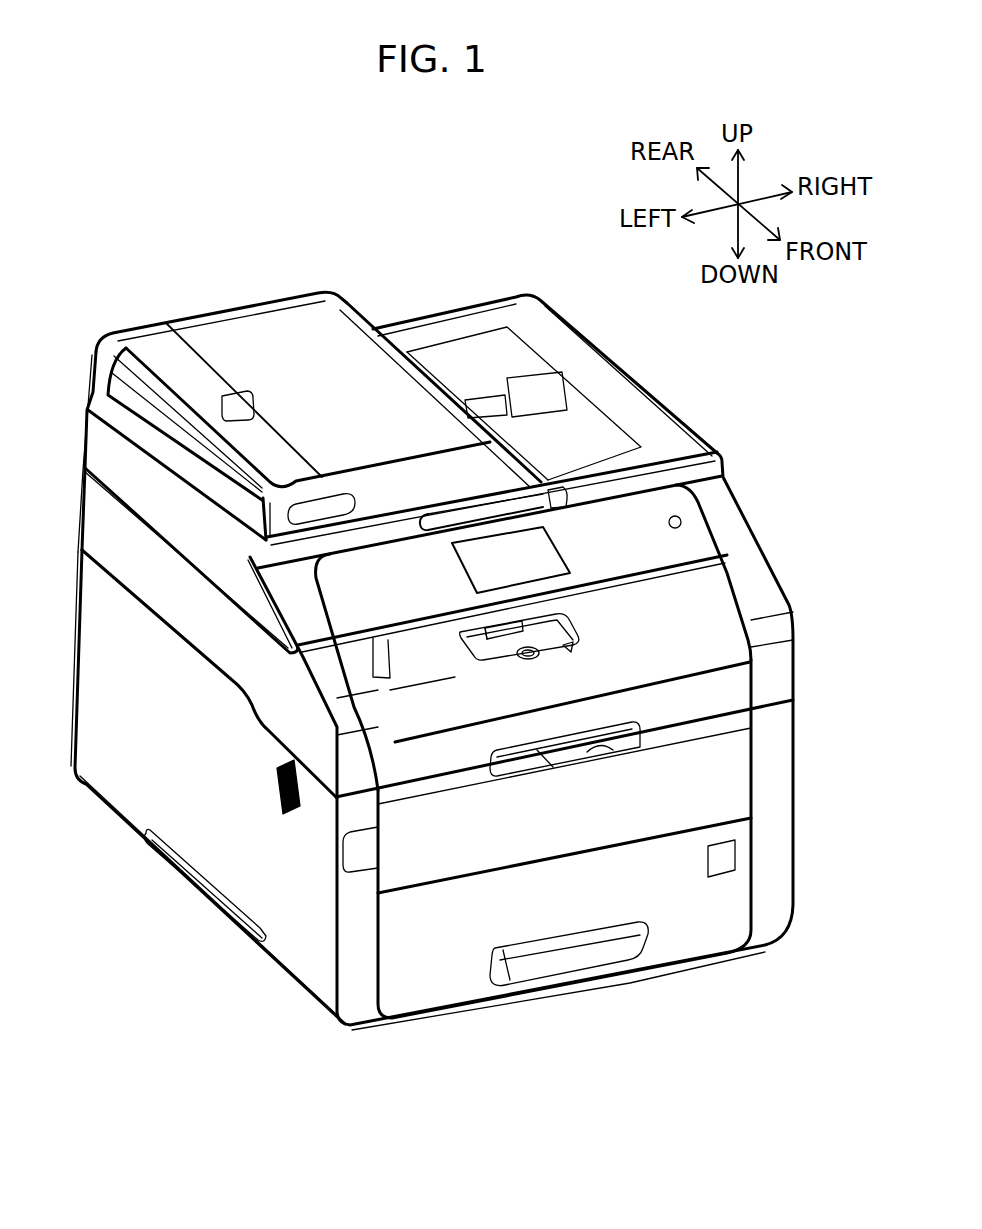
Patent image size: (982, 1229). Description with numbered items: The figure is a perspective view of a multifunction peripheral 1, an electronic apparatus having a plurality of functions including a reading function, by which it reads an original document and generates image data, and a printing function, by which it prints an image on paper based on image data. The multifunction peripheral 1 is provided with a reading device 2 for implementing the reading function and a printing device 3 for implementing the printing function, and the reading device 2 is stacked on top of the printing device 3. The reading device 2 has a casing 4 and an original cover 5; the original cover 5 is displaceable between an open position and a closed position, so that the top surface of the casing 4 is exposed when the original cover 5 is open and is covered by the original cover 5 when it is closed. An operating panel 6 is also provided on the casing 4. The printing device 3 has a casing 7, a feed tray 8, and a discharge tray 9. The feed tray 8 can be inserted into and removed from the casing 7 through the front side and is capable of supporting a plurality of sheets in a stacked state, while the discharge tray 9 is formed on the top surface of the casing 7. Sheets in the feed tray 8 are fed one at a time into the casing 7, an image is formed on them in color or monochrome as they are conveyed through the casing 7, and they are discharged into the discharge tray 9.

The multifunction peripheral 1 is at (488, 1086).
The reading device 2 is at (768, 529).
The printing device 3 is at (815, 778).
The casing 4 is at (92, 455).
The original cover 5 is at (283, 305).
The operating panel 6 is at (527, 545).
The casing 7 is at (196, 842).
The feed tray 8 is at (702, 938).
The discharge tray 9 is at (652, 633).